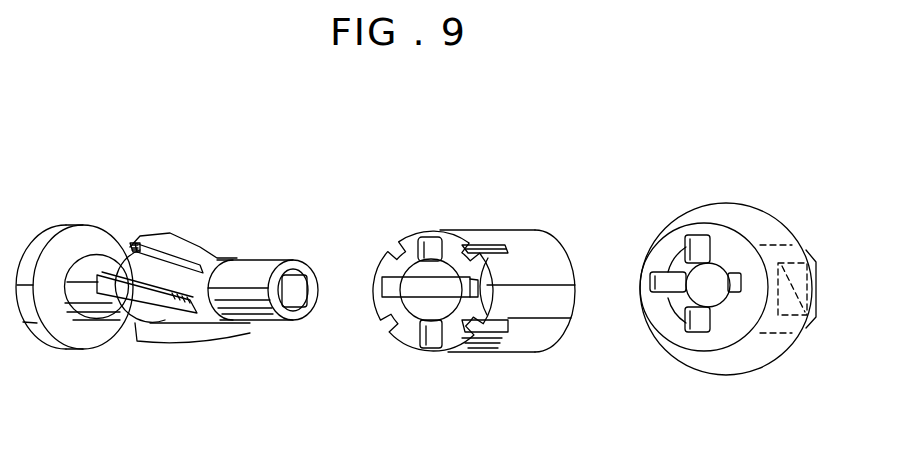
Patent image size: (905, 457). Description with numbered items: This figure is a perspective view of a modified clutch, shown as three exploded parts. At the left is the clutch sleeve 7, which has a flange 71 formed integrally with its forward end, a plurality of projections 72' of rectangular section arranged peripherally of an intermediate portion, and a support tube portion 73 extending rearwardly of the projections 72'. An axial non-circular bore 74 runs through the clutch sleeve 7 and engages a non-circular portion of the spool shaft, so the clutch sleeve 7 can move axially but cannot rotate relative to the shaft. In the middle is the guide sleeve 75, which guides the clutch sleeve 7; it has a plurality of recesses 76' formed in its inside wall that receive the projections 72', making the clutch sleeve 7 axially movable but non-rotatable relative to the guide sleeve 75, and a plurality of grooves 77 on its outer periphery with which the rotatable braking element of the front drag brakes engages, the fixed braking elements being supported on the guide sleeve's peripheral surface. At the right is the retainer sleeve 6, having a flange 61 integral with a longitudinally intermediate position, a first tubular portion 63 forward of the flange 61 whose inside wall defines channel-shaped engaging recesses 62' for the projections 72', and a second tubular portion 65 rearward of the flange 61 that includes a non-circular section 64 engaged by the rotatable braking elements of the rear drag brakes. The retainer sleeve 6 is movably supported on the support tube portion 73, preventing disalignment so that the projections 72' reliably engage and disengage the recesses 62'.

The retainer sleeve 6 is at (743, 198).
The flange 61 is at (773, 353).
The engaging recesses 62' is at (682, 253).
The first tubular portion 63 is at (725, 223).
The non-circular section 64 is at (812, 277).
The second tubular portion 65 is at (807, 253).
The clutch sleeve 7 is at (73, 220).
The flange 71 is at (38, 328).
The projections 72' is at (150, 238).
The support tube portion 73 is at (253, 280).
The non-circular bore 74 is at (294, 310).
The guide sleeve 75 is at (503, 229).
The recesses 76' is at (430, 338).
The grooves 77 is at (500, 335).